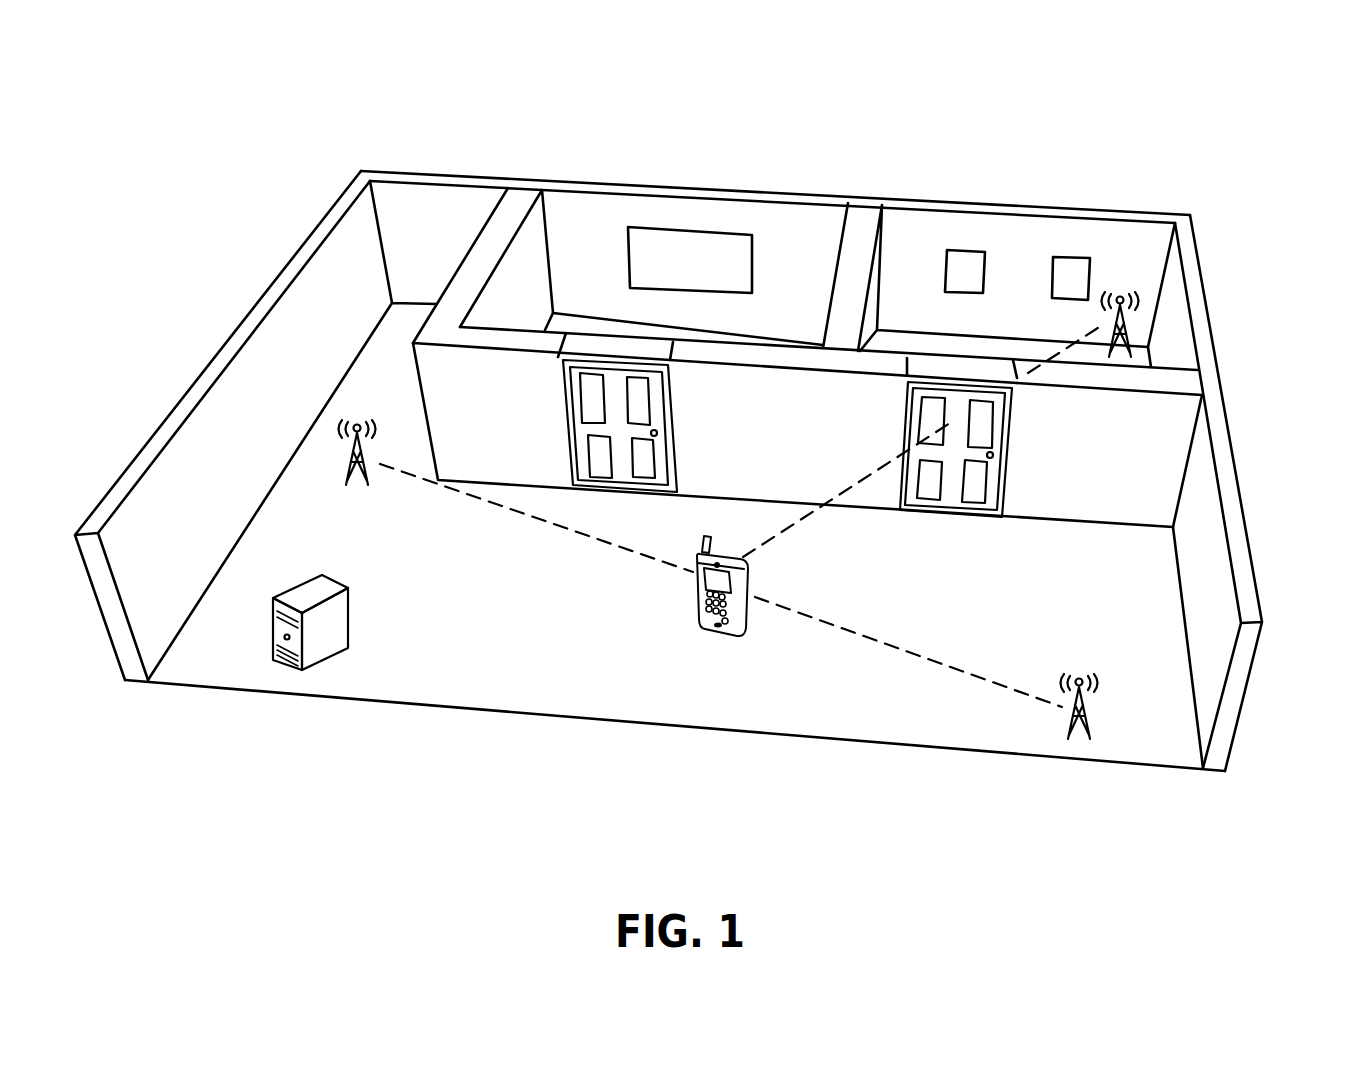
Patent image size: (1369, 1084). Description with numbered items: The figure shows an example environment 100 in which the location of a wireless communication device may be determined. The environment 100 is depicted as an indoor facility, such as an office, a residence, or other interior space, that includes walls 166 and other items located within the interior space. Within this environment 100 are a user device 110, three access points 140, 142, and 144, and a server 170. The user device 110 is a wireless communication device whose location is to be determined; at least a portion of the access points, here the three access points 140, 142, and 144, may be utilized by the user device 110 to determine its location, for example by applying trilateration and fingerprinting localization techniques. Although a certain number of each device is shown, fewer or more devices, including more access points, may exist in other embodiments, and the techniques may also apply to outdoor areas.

The environment 100 is at (1262, 72).
The user device 110 is at (742, 634).
The access point 140 is at (375, 462).
The access point 142 is at (1130, 327).
The access point 144 is at (1084, 732).
The walls 166 is at (1117, 467).
The server 170 is at (270, 610).